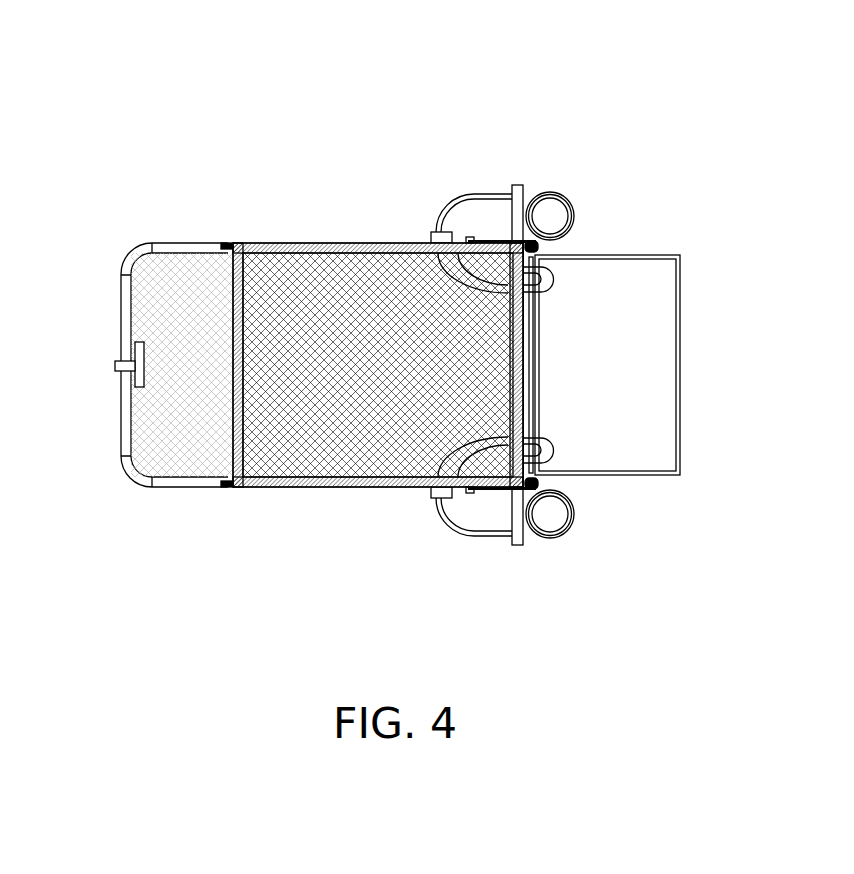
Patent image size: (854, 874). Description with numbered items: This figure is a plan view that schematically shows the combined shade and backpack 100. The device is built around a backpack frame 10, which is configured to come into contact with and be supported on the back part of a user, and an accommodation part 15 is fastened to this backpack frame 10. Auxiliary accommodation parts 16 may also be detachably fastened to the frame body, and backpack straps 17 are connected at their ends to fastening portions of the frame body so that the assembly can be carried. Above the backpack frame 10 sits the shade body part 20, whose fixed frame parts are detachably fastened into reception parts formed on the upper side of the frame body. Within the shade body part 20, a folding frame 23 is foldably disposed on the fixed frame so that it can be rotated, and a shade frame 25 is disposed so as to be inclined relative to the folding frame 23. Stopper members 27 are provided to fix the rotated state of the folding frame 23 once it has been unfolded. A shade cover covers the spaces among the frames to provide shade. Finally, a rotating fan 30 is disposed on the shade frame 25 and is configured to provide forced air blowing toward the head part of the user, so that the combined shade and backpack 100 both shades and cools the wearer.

The combined shade and backpack 100 is at (353, 123).
The backpack frame 10 is at (517, 186).
The accommodation part 15 is at (680, 385).
The auxiliary accommodation parts 16 is at (574, 216).
The backpack straps 17 is at (452, 206).
The shade body part 20 is at (232, 241).
The folding frame 23 is at (356, 240).
The shade frame 25 is at (127, 262).
The stopper members 27 is at (488, 240).
The rotating fan 30 is at (128, 350).